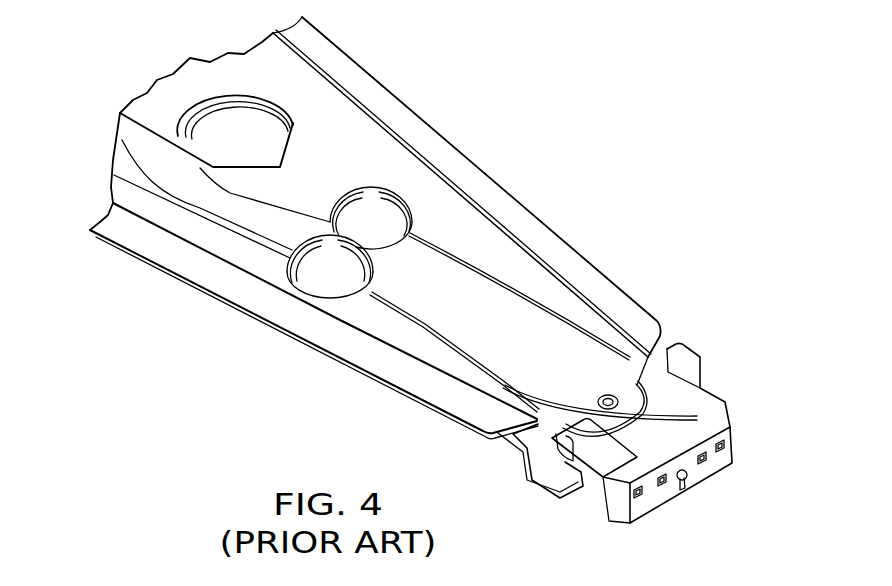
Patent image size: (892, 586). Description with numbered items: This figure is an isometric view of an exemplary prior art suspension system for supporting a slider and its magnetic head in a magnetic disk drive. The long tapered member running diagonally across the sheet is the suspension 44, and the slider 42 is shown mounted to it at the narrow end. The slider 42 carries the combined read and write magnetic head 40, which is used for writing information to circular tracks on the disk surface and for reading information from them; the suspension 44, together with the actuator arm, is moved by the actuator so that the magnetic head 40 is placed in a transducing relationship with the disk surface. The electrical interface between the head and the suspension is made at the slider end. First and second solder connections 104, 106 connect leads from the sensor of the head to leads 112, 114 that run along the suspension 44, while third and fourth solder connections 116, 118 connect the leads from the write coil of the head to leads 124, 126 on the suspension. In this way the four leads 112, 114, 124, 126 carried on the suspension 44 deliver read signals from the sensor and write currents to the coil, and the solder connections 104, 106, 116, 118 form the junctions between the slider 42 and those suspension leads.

The magnetic head 40 is at (684, 493).
The slider 42 is at (576, 503).
The suspension 44 is at (513, 197).
The first solder connection 104 is at (634, 497).
The second solder connection 106 is at (724, 445).
The lead 112 is at (403, 323).
The lead 114 is at (563, 313).
The third solder connection 116 is at (657, 487).
The fourth solder connection 118 is at (704, 460).
The lead 124 is at (423, 327).
The lead 126 is at (495, 272).